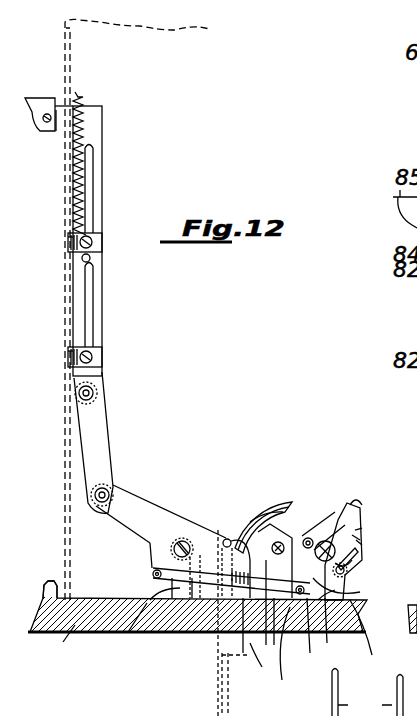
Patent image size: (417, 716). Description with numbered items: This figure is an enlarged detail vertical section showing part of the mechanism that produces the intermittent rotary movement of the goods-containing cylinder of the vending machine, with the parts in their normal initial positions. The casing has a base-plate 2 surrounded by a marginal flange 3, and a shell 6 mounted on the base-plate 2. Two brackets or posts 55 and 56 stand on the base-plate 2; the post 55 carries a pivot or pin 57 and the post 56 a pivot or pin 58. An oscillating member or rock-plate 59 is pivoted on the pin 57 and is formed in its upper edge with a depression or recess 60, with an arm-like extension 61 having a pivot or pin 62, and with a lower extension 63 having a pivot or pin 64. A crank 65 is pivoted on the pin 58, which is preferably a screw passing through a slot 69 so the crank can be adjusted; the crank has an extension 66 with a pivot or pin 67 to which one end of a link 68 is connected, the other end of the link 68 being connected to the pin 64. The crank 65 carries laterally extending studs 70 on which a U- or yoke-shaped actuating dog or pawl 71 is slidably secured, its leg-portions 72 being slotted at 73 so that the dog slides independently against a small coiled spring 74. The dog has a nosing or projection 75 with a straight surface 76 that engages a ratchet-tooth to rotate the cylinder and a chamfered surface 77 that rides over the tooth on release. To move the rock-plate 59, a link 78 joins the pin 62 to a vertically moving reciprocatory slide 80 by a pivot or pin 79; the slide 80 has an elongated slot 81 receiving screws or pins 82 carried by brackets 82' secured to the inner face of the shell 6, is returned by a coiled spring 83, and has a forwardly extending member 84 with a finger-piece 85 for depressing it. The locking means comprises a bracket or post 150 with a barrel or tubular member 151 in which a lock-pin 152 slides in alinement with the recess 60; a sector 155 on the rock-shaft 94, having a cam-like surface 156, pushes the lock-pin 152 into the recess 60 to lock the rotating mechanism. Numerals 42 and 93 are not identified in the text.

The base-plate 2 is at (208, 630).
The marginal flange 3 is at (43, 585).
The shell 6 is at (65, 42).
The rod 42 is at (365, 706).
The bracket or post 55 is at (82, 646).
The bracket or post 56 is at (358, 592).
The pivot or pin 57 is at (178, 538).
The pivot or pin 58 is at (364, 540).
The oscillating member or rock-plate 59 is at (192, 537).
The depression or recess 60 is at (194, 636).
The arm-like extension 61 is at (137, 508).
The pivot or pin 62 is at (113, 485).
The lower extension 63 is at (157, 552).
The pivot or pin 64 is at (152, 573).
The crank 65 is at (339, 634).
The extension 66 is at (258, 640).
The pivot or pin 67 is at (295, 652).
The link 68 is at (163, 632).
The slot 69 is at (368, 518).
The laterally extending studs 70 is at (307, 535).
The actuating dog or pawl 71 is at (332, 520).
The leg-portions 72 is at (330, 612).
The slots 73 is at (322, 522).
The coiled spring 74 is at (386, 513).
The nosing or projection 75 is at (362, 512).
The straight surface 76 is at (340, 513).
The chamfered surface 77 is at (360, 503).
The link 78 is at (93, 418).
The pivot or pin 79 is at (95, 392).
The reciprocatory slide 80 is at (101, 289).
The elongated opening or slot 81 is at (90, 183).
The screws or pins 82 is at (108, 297).
The brackets 82' is at (38, 300).
The coiled spring 83 is at (80, 140).
The forwardly extending member 84 is at (64, 128).
The finger-piece 85 is at (34, 100).
The member 93 is at (274, 712).
The rock-shaft 94 is at (252, 700).
The bracket or post 150 is at (215, 637).
The barrel or tubular member 151 is at (222, 538).
The lock-pin 152 is at (228, 537).
The sector 155 is at (262, 506).
The cam-like surface 156 is at (279, 503).